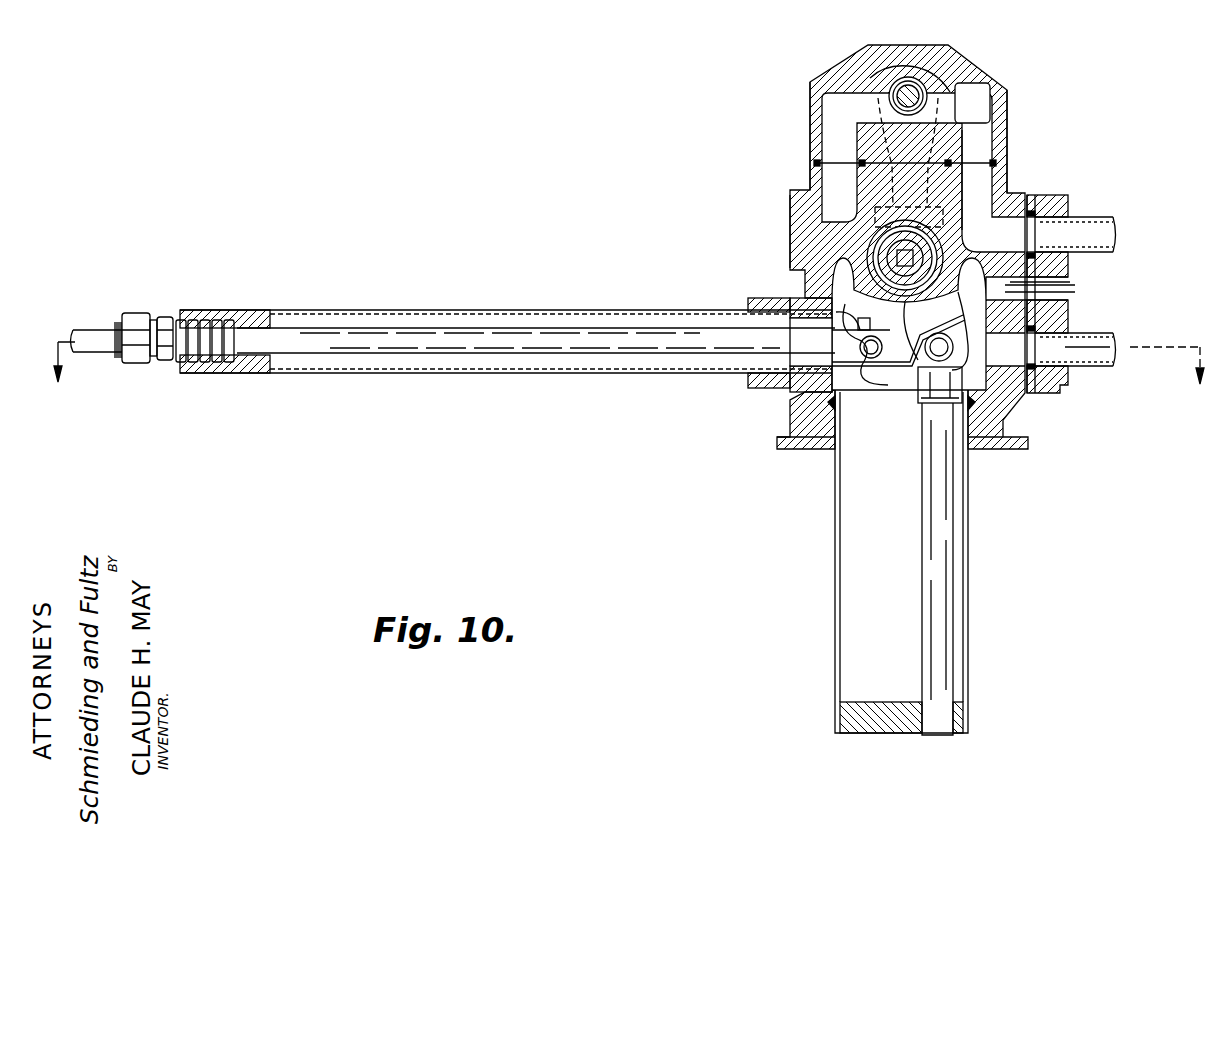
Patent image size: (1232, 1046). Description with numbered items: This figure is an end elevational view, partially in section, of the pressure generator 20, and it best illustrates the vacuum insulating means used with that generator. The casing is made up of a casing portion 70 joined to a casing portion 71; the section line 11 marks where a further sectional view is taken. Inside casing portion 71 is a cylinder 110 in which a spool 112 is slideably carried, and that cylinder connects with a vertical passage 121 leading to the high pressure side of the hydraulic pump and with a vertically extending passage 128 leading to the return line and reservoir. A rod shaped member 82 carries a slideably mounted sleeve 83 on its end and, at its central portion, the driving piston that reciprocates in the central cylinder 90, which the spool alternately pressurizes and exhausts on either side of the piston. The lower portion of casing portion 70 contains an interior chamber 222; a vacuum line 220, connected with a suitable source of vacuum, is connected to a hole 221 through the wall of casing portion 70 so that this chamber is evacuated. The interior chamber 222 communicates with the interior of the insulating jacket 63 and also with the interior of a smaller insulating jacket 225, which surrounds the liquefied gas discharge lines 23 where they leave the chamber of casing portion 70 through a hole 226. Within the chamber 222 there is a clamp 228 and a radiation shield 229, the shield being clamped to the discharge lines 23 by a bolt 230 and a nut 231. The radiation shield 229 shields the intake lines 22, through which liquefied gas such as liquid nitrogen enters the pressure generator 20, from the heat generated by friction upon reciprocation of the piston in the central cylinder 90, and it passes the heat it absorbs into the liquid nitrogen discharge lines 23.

The section line 11— 11 is at (633, 351).
The pressure generator 20 is at (1010, 150).
The intake lines 22 is at (1008, 396).
The discharge line 23 is at (305, 338).
The insulating jacket 63 is at (838, 610).
The casing portion 70 is at (1065, 386).
The casing portion 71 is at (810, 132).
The rod shaped member 82 is at (905, 252).
The sleeve 83 is at (915, 262).
The central cylinder 90 is at (1020, 284).
The cylinder 110 is at (930, 100).
The spool 112 is at (925, 80).
The vertical passage 121 is at (975, 187).
The vertically extending passage 128 is at (800, 206).
The vacuum line 220 is at (1108, 344).
The hole 221 is at (1070, 347).
The interior chamber 222 is at (1010, 296).
The smaller insulating jacket 225 is at (390, 318).
The hole 226 is at (812, 300).
The clamp 228 is at (790, 395).
The radiation shield 229 is at (905, 385).
The bolt 230 is at (866, 380).
The nut 231 is at (818, 322).